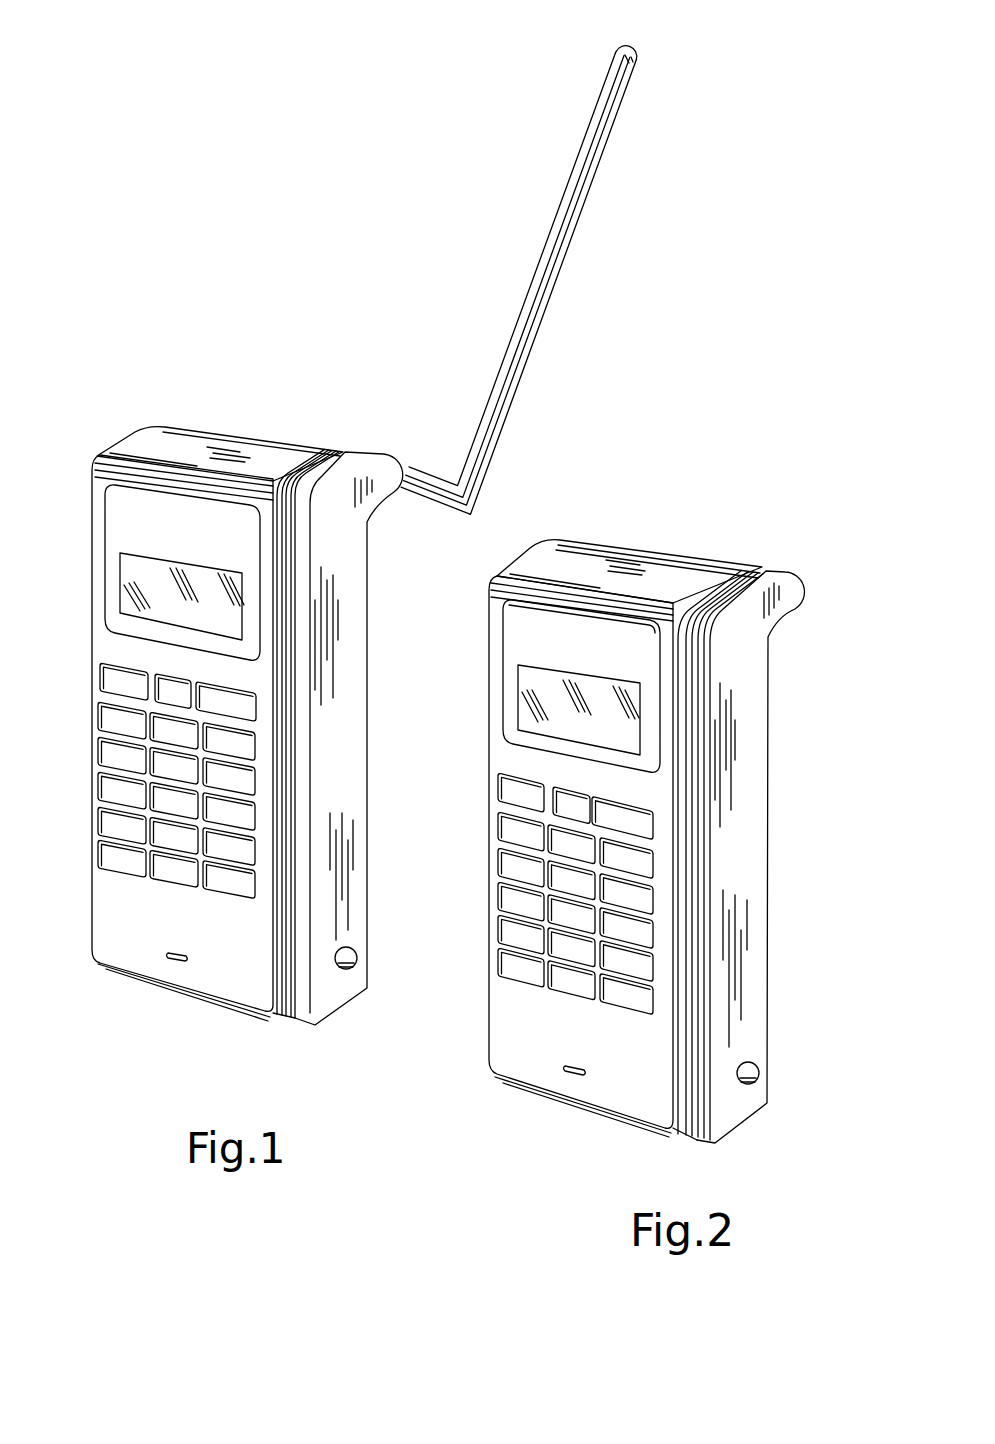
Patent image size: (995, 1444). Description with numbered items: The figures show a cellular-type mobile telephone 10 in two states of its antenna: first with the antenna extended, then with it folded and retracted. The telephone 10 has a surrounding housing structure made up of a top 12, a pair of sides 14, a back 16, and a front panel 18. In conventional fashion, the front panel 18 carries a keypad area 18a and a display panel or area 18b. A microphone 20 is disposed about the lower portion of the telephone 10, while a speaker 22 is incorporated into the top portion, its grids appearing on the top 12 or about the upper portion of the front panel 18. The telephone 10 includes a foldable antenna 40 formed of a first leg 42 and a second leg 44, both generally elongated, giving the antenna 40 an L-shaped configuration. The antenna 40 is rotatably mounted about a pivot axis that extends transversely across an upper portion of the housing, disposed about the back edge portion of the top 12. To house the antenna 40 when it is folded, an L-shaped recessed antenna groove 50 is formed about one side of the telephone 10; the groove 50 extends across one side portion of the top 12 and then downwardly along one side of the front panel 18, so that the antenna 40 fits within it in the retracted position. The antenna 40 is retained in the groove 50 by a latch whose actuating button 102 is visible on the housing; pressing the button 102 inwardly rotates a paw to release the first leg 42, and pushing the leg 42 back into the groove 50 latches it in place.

In FIG. 1, the mobile telephone 10 is at (223, 375).
In FIG. 2, the mobile telephone 10 is at (669, 477).
In FIG. 1, the top 12 is at (152, 445).
In FIG. 2, the top 12 is at (530, 555).
In FIG. 1, the sides 14 is at (358, 738).
In FIG. 2, the sides 14 is at (746, 857).
In FIG. 1, the back 16 is at (368, 626).
In FIG. 2, the back 16 is at (768, 713).
In FIG. 1, the front panel 18 is at (143, 795).
In FIG. 2, the front panel 18 is at (536, 908).
In FIG. 1, the keypad area 18a is at (105, 733).
In FIG. 2, the keypad area 18a is at (497, 803).
In FIG. 1, the display panel 18b is at (135, 585).
In FIG. 2, the display panel 18b is at (540, 682).
In FIG. 1, the microphone 20 is at (170, 962).
In FIG. 2, the microphone 20 is at (566, 1077).
In FIG. 1, the speaker 22 is at (232, 455).
In FIG. 2, the speaker 22 is at (615, 563).
In FIG. 1, the foldable antenna 40 is at (607, 275).
In FIG. 2, the foldable antenna 40 is at (775, 517).
In FIG. 1, the first leg 42 is at (412, 468).
In FIG. 2, the first leg 42 is at (722, 582).
In FIG. 1, the second leg 44 is at (514, 294).
In FIG. 2, the second leg 44 is at (687, 820).
In FIG. 1, the recessed antenna groove 50 is at (287, 558).
In FIG. 1, the actuating button 102 is at (356, 950).
In FIG. 2, the actuating button 102 is at (758, 1078).